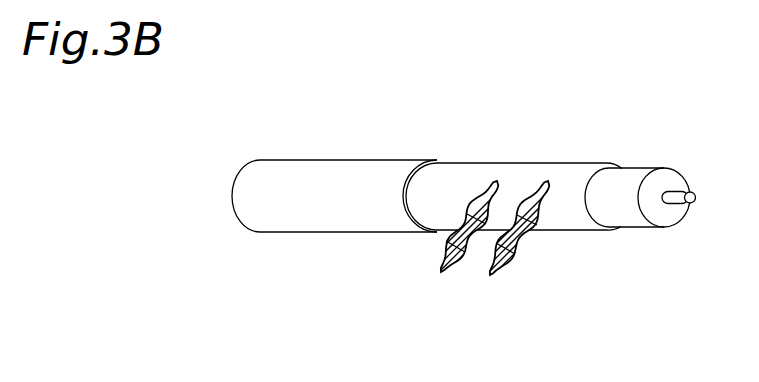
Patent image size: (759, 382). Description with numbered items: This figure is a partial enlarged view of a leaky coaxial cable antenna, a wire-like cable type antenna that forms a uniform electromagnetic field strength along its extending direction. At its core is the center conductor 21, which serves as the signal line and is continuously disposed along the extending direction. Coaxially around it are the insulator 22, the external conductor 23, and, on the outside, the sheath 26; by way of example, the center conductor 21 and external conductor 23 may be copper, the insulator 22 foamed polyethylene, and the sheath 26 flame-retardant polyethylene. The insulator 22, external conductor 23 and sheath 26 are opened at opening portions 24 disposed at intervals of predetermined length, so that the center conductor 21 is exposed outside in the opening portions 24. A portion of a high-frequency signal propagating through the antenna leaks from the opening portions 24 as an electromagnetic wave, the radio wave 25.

The center conductor 21 is at (691, 192).
The insulator 22 is at (634, 168).
The external conductor 23 is at (518, 163).
The opening portion 24 is at (479, 190).
The radio wave 25 is at (505, 266).
The sheath 26 is at (335, 160).